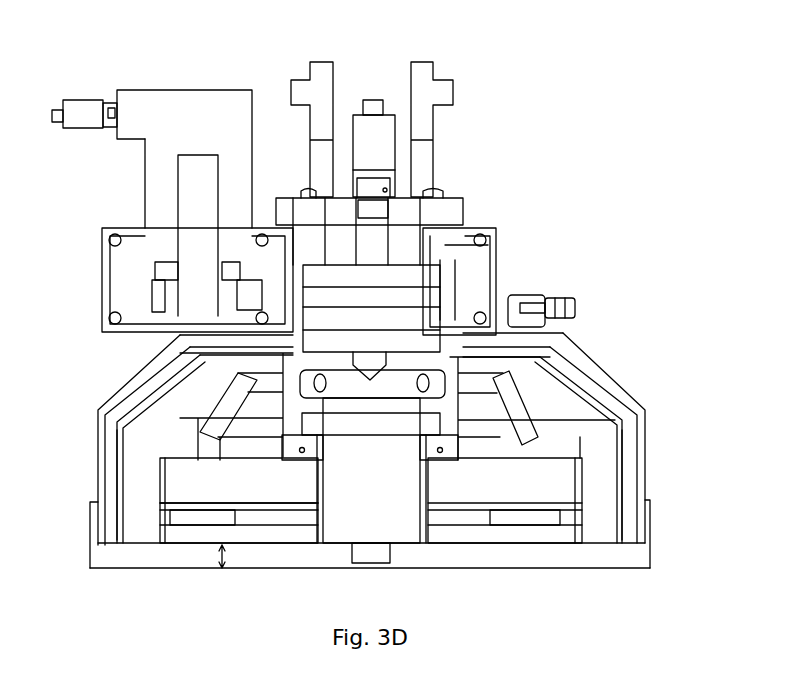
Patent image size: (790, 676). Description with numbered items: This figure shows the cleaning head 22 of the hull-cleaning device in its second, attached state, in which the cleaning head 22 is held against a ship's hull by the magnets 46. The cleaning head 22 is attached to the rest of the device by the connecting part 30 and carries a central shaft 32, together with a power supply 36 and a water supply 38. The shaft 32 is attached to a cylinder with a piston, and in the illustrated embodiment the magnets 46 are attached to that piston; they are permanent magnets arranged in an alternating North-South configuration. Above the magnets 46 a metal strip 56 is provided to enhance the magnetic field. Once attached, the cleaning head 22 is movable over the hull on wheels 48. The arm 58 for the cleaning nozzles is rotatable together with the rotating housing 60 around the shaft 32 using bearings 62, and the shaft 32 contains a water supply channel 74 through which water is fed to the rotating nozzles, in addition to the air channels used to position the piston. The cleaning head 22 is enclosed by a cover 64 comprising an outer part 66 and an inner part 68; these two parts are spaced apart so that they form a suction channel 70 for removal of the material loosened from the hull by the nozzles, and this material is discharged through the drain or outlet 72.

The cleaning head 22 is at (618, 212).
The connecting part 30 is at (318, 72).
The shaft 32 is at (368, 122).
The power supply 36 is at (69, 84).
The water supply 38 is at (97, 84).
The magnets 46 is at (172, 533).
The wheels 48 is at (382, 557).
The metal strip 56 is at (173, 517).
The arm 58 is at (508, 400).
The rotating housing 60 is at (290, 402).
The bearings 62 is at (373, 300).
The cover 64 is at (607, 348).
The outer part 66 is at (637, 427).
The inner part 68 is at (618, 473).
The suction channel 70 is at (627, 530).
The drain or outlet 72 is at (522, 295).
The water supply channel 74 is at (236, 556).